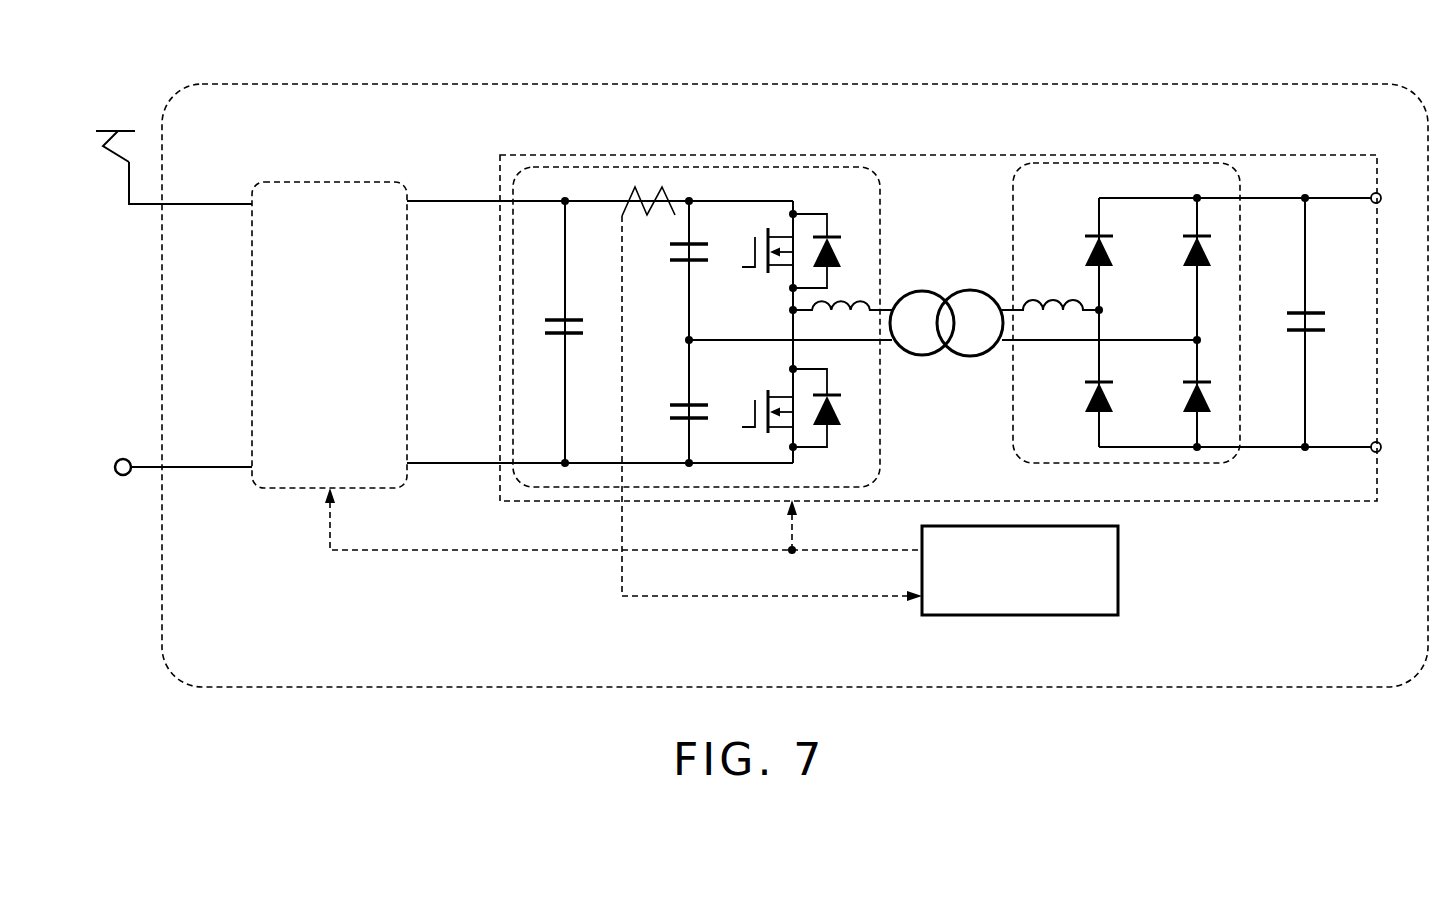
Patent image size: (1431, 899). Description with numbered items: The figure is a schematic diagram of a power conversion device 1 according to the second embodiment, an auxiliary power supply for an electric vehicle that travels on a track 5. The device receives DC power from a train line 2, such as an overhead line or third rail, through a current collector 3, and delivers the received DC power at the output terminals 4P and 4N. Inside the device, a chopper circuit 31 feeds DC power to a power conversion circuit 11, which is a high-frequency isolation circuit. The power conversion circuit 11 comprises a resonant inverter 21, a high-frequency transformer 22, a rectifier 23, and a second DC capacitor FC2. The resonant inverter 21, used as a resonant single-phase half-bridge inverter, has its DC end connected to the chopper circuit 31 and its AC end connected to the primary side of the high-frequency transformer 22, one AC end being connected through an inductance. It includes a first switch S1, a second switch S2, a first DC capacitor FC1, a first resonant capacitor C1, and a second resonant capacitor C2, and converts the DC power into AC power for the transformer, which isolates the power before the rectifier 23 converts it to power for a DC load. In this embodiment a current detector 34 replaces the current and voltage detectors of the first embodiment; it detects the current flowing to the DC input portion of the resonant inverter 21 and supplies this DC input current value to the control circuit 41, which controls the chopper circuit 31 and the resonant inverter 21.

The power conversion device 1 is at (248, 84).
The train line 2 is at (118, 130).
The current collector 3 is at (116, 158).
The track 5 is at (122, 477).
The power conversion circuit 11 is at (586, 155).
The resonant inverter 21 is at (733, 167).
The high-frequency transformer 22 is at (952, 292).
The rectifier 23 is at (1136, 163).
The chopper circuit 31 is at (330, 181).
The current detector 34 is at (645, 190).
The control circuit 41 is at (1120, 571).
The output terminal 4P is at (1381, 193).
The output terminal 4N is at (1381, 441).
The first resonant capacitor C1 is at (698, 234).
The second resonant capacitor C2 is at (698, 397).
The first switch S1 is at (760, 273).
The second switch S2 is at (758, 434).
The first DC capacitor FC1 is at (568, 338).
The second DC capacitor FC2 is at (1336, 290).